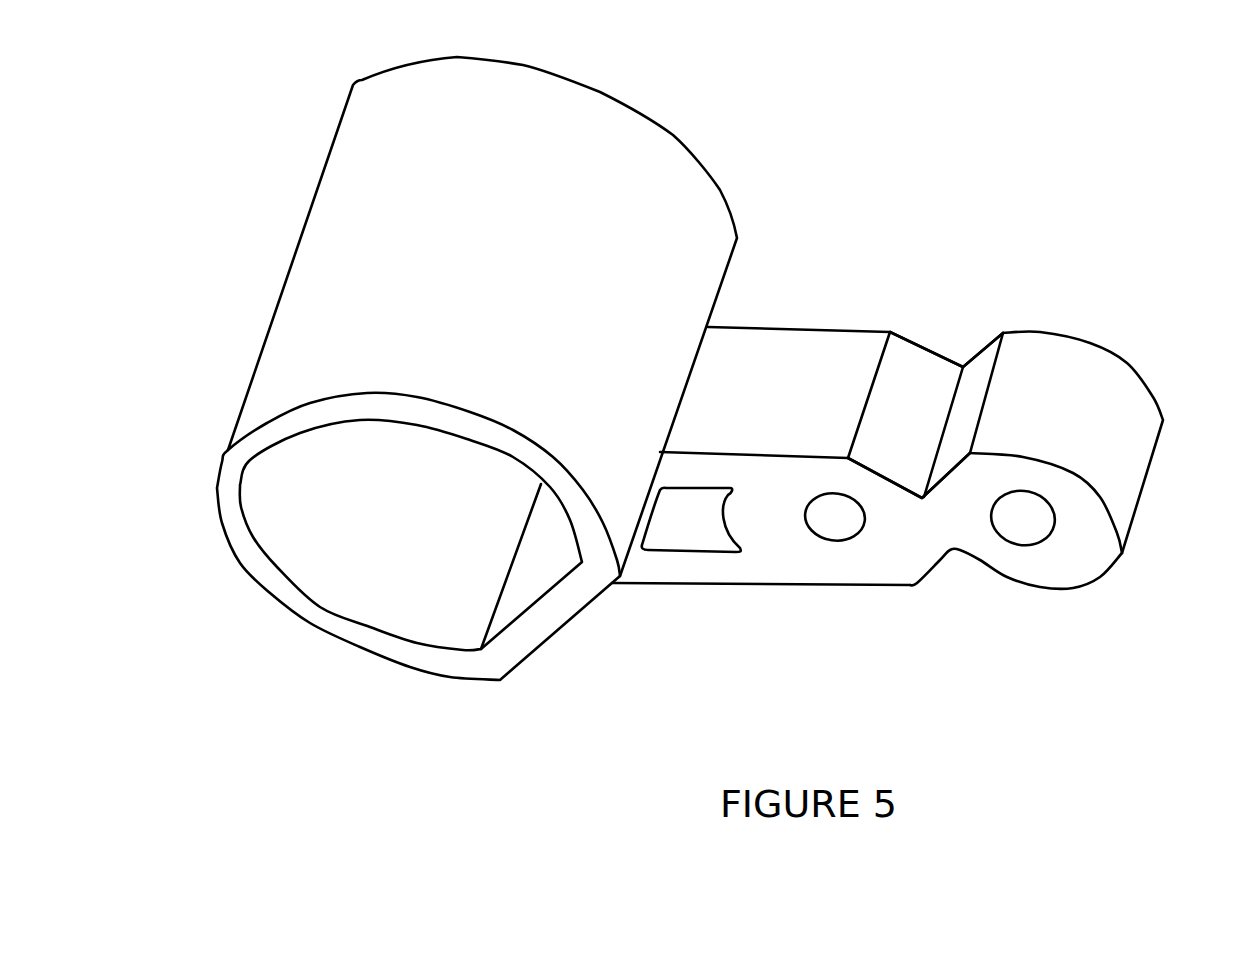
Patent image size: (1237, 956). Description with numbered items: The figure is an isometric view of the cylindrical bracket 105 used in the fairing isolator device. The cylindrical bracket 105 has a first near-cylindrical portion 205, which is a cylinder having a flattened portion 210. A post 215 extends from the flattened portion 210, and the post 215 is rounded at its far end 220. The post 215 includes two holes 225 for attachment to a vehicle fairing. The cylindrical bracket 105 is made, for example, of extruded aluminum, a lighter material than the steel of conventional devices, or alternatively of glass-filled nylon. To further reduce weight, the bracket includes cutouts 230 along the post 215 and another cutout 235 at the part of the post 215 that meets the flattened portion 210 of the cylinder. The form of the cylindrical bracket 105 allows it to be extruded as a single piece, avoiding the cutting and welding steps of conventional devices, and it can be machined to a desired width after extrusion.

The cylindrical bracket 105 is at (322, 162).
The first near-cylindrical portion 205 is at (315, 627).
The flattened portion 210 is at (538, 638).
The post 215 is at (795, 325).
The far end 220 is at (1152, 466).
The holes 225 is at (832, 530).
The cutouts 230 is at (942, 362).
The cutout 235 is at (687, 533).